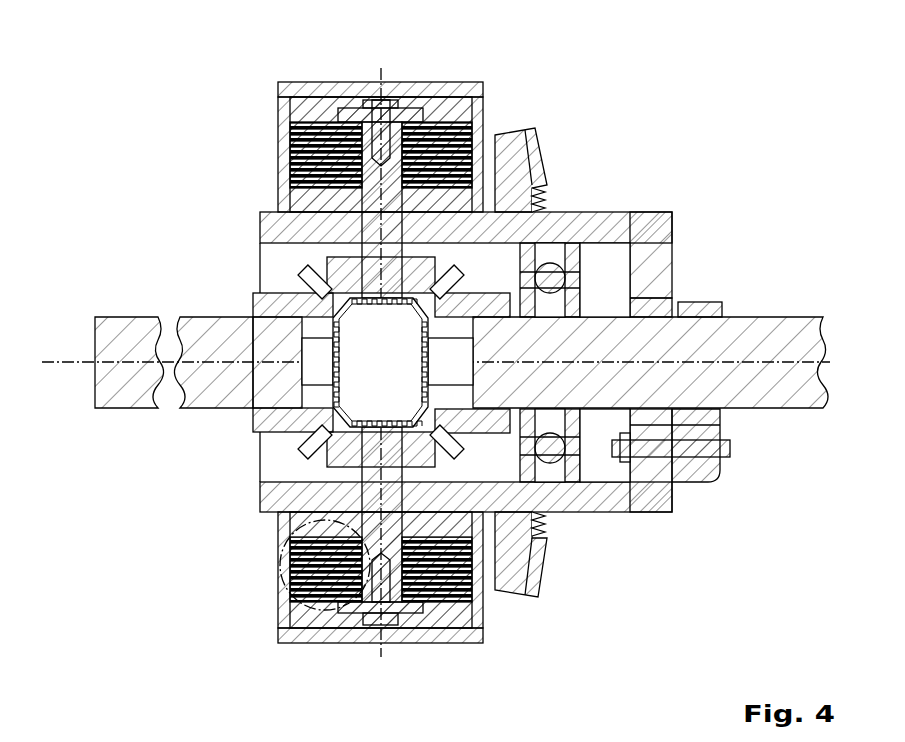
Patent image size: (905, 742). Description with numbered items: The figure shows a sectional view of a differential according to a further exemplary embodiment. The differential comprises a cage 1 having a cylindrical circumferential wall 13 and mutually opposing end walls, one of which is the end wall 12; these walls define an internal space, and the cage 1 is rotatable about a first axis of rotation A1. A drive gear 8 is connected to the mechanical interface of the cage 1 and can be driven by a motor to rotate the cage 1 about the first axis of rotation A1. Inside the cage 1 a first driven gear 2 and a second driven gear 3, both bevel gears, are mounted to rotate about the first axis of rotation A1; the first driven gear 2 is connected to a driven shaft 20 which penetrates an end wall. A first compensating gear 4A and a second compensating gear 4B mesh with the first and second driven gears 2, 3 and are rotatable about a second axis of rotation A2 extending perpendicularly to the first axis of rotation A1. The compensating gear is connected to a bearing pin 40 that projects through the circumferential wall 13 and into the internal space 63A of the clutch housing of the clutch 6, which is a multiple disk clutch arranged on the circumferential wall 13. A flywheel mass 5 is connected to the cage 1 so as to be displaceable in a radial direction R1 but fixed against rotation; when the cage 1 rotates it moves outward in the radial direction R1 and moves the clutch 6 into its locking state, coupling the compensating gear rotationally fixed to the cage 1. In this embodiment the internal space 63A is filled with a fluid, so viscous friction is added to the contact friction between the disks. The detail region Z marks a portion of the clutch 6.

The cage 1 is at (588, 225).
The first driven gear 2 is at (312, 296).
The second driven gear 3 is at (450, 312).
The first compensating gear 4A is at (328, 272).
The second compensating gear 4B is at (458, 405).
The flywheel mass 5 is at (288, 88).
The clutch 6 is at (417, 81).
The drive gear 8 is at (510, 142).
The end wall 12 is at (652, 242).
The circumferential wall 13 is at (613, 500).
The driven shaft 20 is at (115, 330).
The bearing pin 40 is at (373, 198).
The internal space of the clutch housing 63A is at (337, 592).
The first axis of rotation A1 is at (68, 364).
The second axis of rotation A2 is at (380, 452).
The radial direction R1 is at (788, 362).
The detail region Z is at (282, 545).